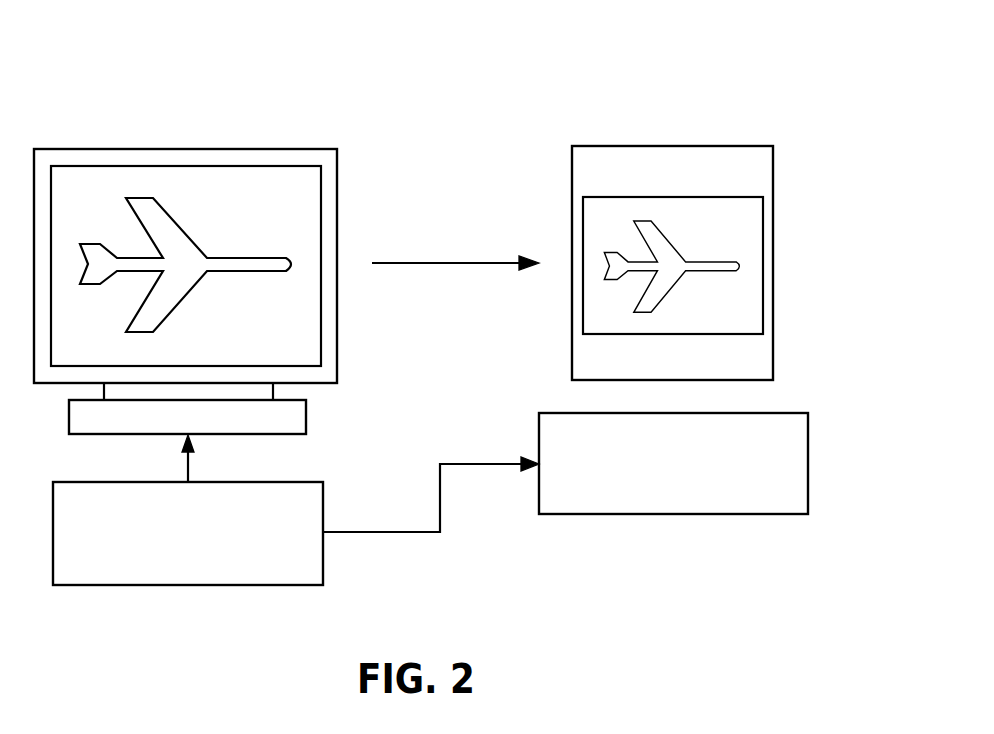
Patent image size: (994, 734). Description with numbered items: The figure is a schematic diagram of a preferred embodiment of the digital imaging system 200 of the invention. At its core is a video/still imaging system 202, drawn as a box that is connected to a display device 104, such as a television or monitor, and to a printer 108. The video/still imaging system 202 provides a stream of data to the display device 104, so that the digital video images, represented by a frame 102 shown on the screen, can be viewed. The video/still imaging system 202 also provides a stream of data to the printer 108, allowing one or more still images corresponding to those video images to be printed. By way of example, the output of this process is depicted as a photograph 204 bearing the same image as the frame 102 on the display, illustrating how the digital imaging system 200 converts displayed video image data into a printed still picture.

The frame 102 is at (101, 147).
The display device 104 is at (254, 193).
The printer 108 is at (538, 447).
The digital imaging system 200 is at (788, 113).
The video/still imaging system 202 is at (307, 480).
The photograph 204 is at (740, 145).